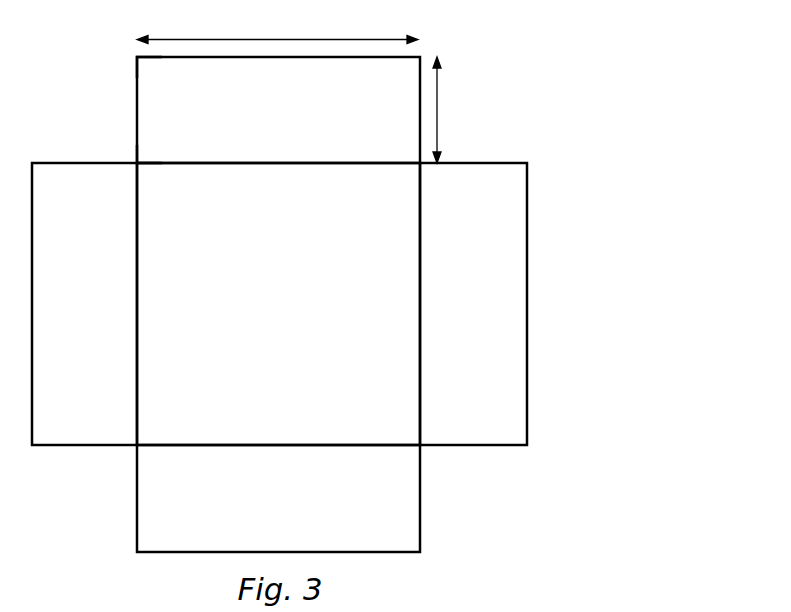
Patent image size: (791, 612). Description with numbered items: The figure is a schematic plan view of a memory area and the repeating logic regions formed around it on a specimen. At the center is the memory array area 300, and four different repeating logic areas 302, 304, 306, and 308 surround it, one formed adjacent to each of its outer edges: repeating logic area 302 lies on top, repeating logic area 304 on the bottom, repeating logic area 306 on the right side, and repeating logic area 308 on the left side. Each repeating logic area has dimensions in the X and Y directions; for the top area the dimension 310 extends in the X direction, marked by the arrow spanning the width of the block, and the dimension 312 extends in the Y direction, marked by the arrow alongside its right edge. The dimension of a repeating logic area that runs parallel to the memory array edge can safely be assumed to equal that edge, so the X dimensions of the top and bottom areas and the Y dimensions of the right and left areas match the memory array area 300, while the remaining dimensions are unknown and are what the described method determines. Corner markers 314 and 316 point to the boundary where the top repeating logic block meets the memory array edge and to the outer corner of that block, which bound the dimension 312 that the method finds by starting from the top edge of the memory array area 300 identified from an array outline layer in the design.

The memory array area 300 is at (259, 329).
The repeating logic area 302 is at (260, 134).
The repeating logic area 304 is at (260, 522).
The repeating logic area 306 is at (449, 285).
The repeating logic area 308 is at (59, 286).
The dimension in the X direction 310 is at (173, 38).
The dimension in the Y direction 312 is at (438, 84).
The corner of memory array / repeating logic boundary 314 is at (153, 163).
The corner of repeating logic block 316 is at (153, 57).